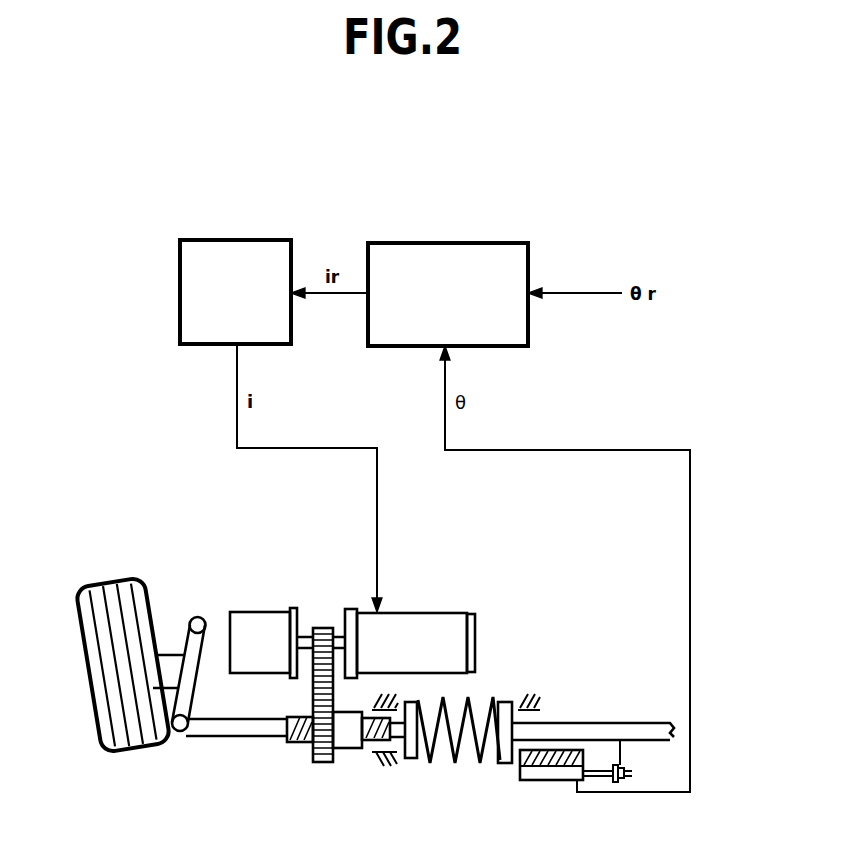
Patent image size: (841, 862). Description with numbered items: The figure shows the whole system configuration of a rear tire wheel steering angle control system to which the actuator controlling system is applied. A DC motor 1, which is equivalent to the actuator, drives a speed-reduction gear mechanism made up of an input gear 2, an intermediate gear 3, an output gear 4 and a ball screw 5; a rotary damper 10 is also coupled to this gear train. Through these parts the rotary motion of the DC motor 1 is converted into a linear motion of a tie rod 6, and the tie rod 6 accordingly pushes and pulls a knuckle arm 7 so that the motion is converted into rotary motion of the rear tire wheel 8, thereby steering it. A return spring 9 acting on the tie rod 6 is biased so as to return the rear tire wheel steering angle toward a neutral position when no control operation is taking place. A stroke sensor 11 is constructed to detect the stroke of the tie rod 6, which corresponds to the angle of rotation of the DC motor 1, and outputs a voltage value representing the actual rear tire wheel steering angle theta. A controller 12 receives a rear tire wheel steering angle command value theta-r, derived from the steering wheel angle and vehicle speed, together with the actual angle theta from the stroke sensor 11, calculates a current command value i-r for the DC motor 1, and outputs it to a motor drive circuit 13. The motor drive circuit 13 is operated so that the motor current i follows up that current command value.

The DC motor 1 is at (423, 625).
The input gear 2 is at (321, 628).
The intermediate gear 3 is at (318, 652).
The output gear 4 is at (322, 765).
The ball screw 5 is at (352, 744).
The tie rod 6 is at (222, 740).
The knuckle arm 7 is at (186, 683).
The rear tire wheel 8 is at (143, 580).
The return spring 9 is at (474, 764).
The rotary damper 10 is at (255, 624).
The stroke sensor 11 is at (558, 775).
The controller 12 is at (439, 243).
The motor drive circuit 13 is at (241, 240).